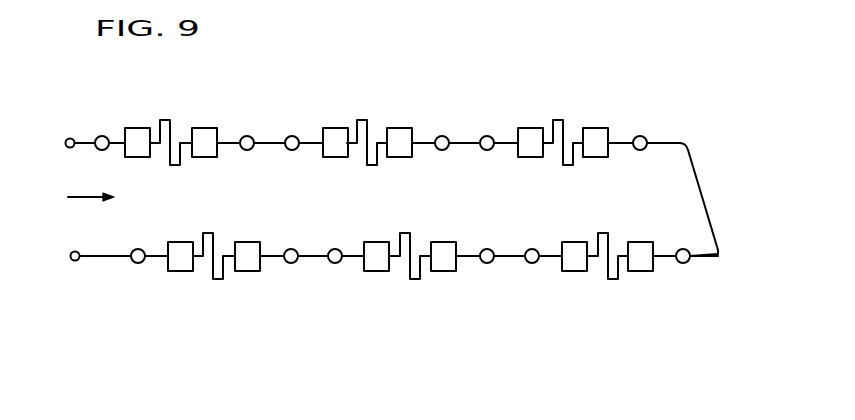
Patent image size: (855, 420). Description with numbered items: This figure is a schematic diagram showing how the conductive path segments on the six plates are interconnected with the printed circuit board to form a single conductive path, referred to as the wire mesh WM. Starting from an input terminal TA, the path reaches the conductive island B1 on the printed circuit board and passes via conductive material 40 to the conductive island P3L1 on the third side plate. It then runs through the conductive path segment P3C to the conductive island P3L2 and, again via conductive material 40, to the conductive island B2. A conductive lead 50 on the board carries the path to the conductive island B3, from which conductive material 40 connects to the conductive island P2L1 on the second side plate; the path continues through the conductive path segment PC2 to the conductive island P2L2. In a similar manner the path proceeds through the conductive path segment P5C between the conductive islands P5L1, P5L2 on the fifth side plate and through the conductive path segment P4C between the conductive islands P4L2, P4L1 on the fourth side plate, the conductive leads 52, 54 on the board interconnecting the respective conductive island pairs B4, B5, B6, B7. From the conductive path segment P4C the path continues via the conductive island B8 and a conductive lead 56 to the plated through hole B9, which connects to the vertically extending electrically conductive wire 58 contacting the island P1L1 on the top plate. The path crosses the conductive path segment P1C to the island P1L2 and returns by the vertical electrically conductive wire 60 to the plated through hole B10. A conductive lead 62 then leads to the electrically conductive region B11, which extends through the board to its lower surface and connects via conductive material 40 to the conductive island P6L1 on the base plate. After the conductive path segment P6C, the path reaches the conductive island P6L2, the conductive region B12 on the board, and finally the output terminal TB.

The conductive material 40 is at (117, 148).
The conductive lead 50 is at (265, 139).
The conductive lead 52 is at (468, 139).
The conductive lead 54 is at (675, 141).
The conductive lead 56 is at (511, 262).
The electrically conductive wire 58 is at (470, 262).
The electrically conductive wire 60 is at (353, 262).
The conductive lead 62 is at (309, 262).
The input terminal TA is at (66, 139).
The output terminal TB is at (73, 261).
The wire mesh WM is at (76, 198).
The conductive island B1 is at (98, 150).
The conductive island B2 is at (252, 137).
The conductive island B3 is at (297, 137).
The conductive island B4 is at (446, 136).
The conductive island B5 is at (486, 136).
The conductive island B6 is at (642, 137).
The conductive island B7 is at (684, 249).
The conductive island B8 is at (529, 264).
The plated through hole B9 is at (480, 263).
The plated through hole B10 is at (341, 264).
The electrically conductive region B11 is at (293, 263).
The conductive region B12 is at (133, 250).
The conductive island P3L1 is at (142, 128).
The conductive island P3L2 is at (196, 128).
The conductive path segment P3C is at (167, 158).
The conductive island P2L1 is at (340, 128).
The conductive island P2L2 is at (400, 128).
The conductive path segment PC2 is at (366, 158).
The conductive island P5L1 is at (531, 128).
The conductive island P5L2 is at (590, 128).
The conductive path segment P5C is at (562, 158).
The conductive island P6L1 is at (248, 272).
The conductive island P6L2 is at (177, 272).
The conductive path segment P6C is at (216, 243).
The conductive island P1L1 is at (445, 272).
The conductive island P1L2 is at (379, 272).
The conductive path segment P1C is at (413, 240).
The conductive island P4L1 is at (647, 272).
The conductive island P4L2 is at (580, 272).
The conductive path segment P4C is at (613, 240).